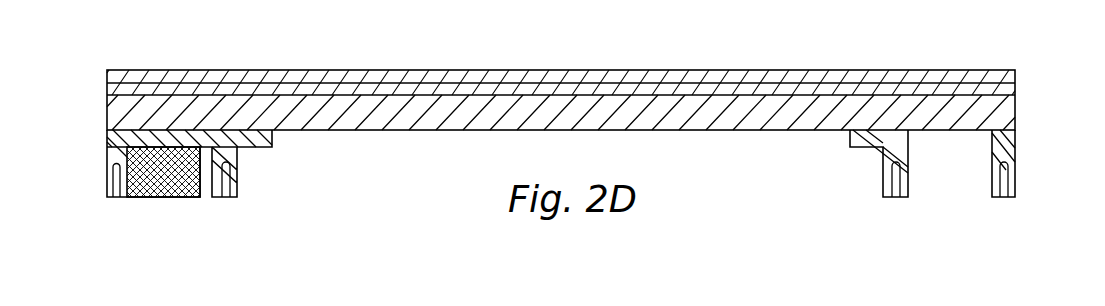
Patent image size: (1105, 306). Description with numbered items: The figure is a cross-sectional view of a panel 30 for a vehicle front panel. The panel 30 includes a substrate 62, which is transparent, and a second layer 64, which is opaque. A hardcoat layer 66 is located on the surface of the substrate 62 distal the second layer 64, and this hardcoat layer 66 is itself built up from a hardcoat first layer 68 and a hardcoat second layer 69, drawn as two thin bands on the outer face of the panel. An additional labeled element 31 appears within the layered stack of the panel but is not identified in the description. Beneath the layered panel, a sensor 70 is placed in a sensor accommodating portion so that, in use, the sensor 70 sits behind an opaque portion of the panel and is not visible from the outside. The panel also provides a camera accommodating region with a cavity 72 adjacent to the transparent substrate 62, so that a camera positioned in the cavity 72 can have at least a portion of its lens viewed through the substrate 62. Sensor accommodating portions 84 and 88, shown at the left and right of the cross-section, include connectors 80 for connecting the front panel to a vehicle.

The panel 30 is at (512, 70).
The substrate layer 31 is at (812, 118).
The substrate 62 is at (107, 117).
The second layer 64 is at (853, 147).
The hardcoat layer 66 is at (172, 113).
The hardcoat first layer 68 is at (1015, 89).
The hardcoat second layer 69 is at (1013, 76).
The sensor 70 is at (172, 197).
The cavity 72 is at (948, 170).
The connectors 80 is at (107, 197).
The sensor accommodating portion 84 is at (107, 163).
The sensor accommodating portion 88 is at (1017, 170).